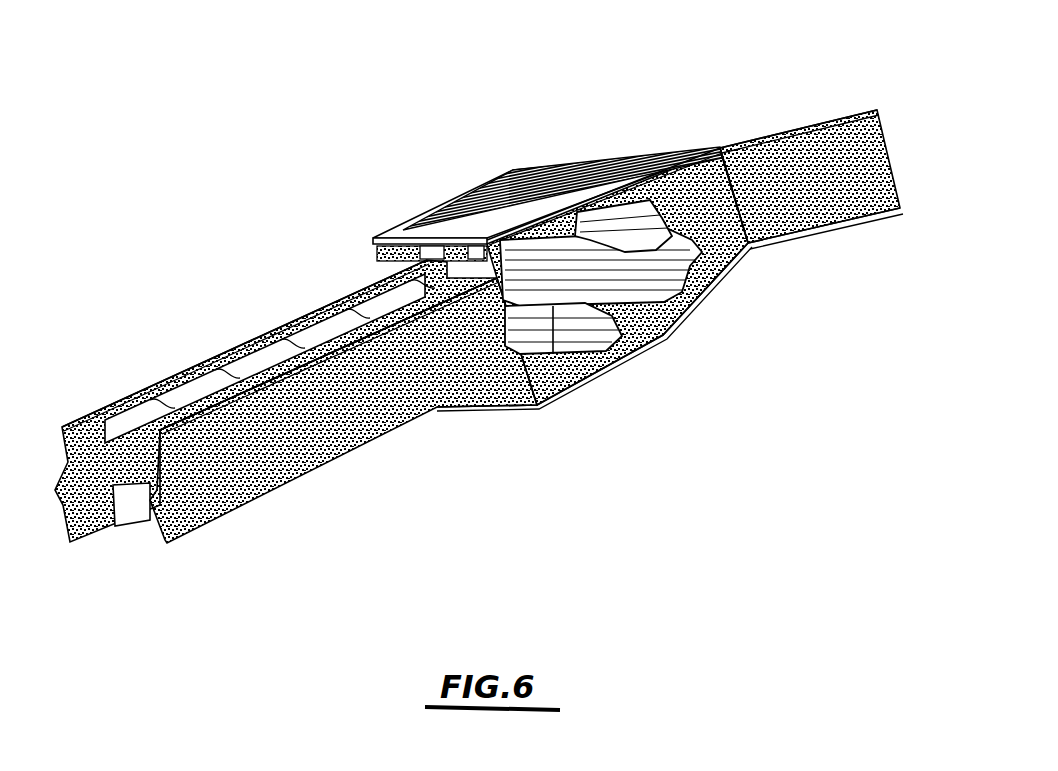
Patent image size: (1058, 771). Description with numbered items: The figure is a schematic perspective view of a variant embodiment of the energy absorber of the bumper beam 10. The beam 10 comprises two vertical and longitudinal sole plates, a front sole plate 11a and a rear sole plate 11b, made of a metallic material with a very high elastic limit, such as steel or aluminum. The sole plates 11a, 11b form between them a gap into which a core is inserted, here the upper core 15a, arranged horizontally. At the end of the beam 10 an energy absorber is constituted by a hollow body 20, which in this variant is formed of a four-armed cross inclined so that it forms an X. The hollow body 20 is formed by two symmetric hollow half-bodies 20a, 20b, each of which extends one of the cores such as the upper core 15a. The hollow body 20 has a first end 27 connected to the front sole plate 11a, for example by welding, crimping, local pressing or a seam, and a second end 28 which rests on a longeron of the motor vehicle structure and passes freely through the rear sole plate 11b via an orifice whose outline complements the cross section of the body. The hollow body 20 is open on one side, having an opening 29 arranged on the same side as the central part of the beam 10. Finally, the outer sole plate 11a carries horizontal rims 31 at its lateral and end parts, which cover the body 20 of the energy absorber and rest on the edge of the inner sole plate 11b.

The beam 10 is at (353, 186).
The front sole plate 11a is at (80, 445).
The rear sole plate 11b is at (300, 447).
The upper core 15a is at (270, 357).
The hollow body 20 is at (700, 264).
The hollow half-body 20a is at (615, 222).
The hollow half-body 20b is at (650, 312).
The first end 27 is at (430, 252).
The second end 28 is at (687, 187).
The opening 29 is at (553, 330).
The horizontal rims 31 is at (648, 153).